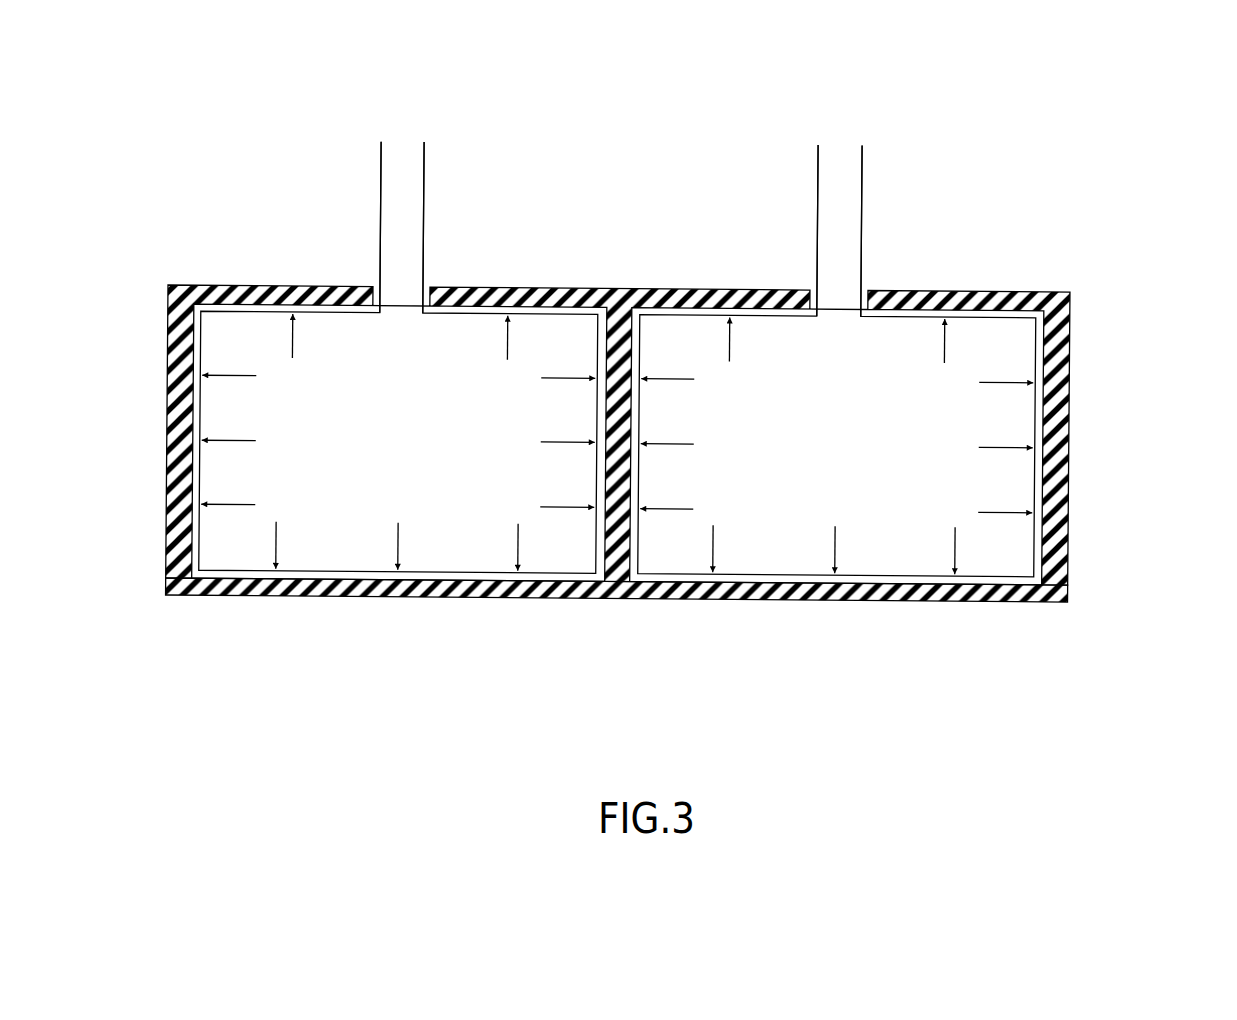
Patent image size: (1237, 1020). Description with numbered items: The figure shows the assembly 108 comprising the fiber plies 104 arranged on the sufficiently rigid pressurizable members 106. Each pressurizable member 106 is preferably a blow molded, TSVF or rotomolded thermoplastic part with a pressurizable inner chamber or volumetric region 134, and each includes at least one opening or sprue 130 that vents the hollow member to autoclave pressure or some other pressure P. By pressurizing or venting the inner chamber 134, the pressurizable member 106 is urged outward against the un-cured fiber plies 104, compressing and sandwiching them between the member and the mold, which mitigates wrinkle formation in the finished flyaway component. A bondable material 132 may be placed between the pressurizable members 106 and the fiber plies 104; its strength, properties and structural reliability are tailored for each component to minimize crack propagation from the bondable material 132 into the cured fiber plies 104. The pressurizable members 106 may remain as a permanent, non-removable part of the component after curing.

The assembly 108 is at (692, 371).
The opening or sprue 130 is at (621, 229).
The bondable material 132 is at (618, 358).
The fiber plies 104 is at (618, 435).
The pressurizable members 106 is at (617, 590).
The pressurizable inner chamber or volumetric region 134 is at (617, 444).